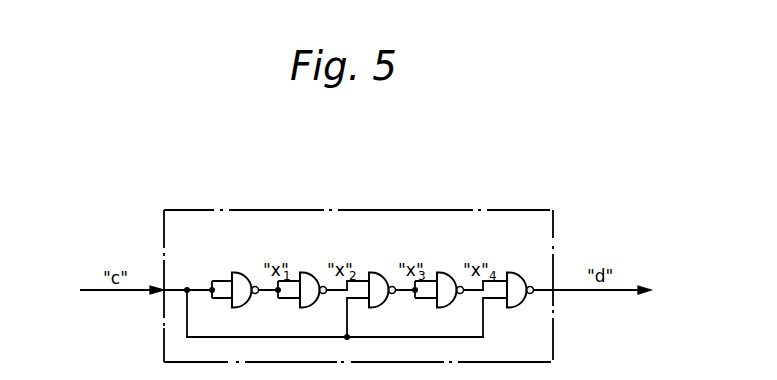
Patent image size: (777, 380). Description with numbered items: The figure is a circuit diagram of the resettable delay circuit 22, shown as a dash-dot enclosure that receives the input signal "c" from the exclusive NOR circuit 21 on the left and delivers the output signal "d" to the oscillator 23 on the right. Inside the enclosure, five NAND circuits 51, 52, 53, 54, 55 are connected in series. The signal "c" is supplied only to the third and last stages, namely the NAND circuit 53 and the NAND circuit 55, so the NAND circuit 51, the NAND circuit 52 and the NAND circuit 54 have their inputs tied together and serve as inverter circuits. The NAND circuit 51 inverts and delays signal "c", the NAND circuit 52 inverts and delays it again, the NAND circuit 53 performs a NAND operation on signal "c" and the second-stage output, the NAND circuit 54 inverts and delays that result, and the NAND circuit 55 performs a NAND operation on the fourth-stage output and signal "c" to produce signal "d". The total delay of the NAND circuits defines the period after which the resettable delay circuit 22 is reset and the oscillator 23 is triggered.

The exclusive NOR circuit 21 is at (117, 293).
The resettable delay circuit 22 is at (511, 208).
The oscillator 23 is at (612, 288).
The NAND circuit 51 is at (234, 272).
The NAND circuit 52 is at (303, 272).
The NAND circuit 53 is at (372, 272).
The NAND circuit 54 is at (440, 272).
The NAND circuit 55 is at (511, 271).